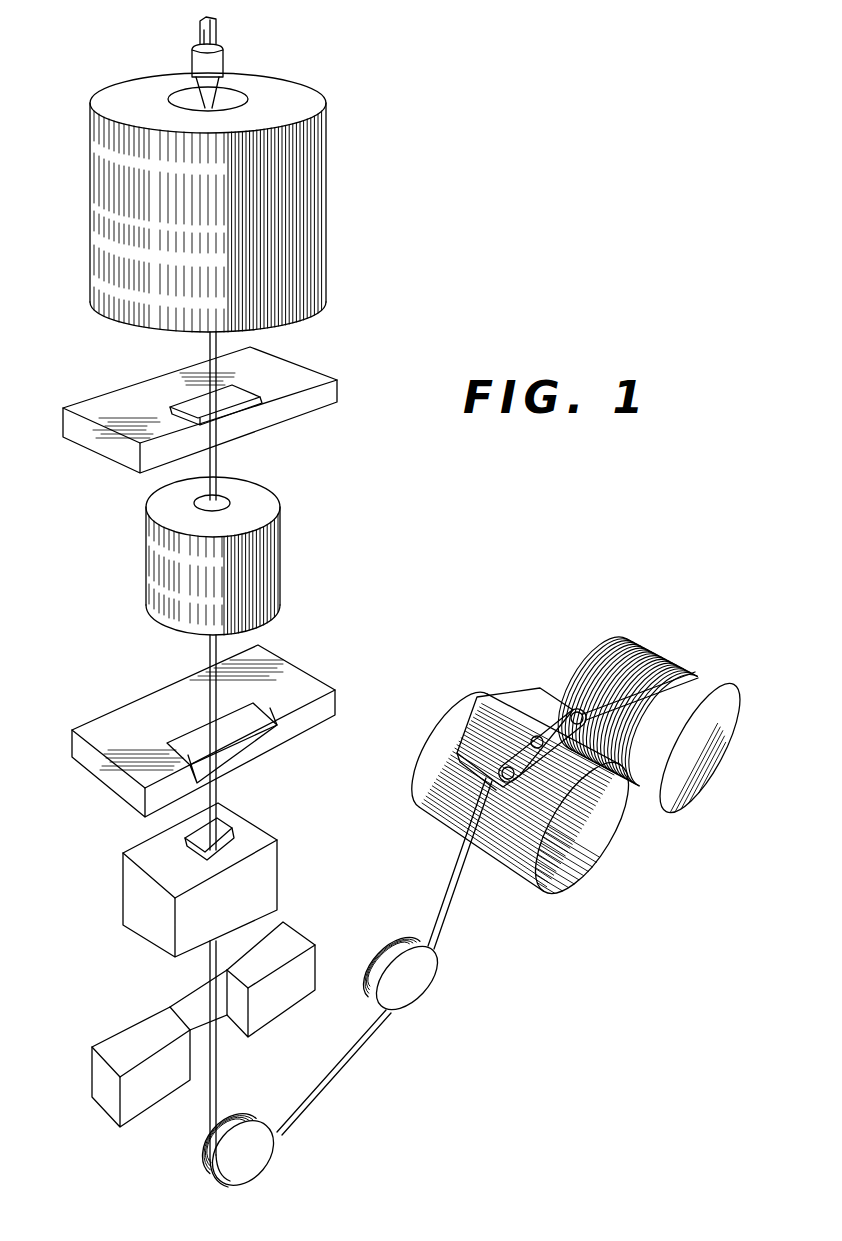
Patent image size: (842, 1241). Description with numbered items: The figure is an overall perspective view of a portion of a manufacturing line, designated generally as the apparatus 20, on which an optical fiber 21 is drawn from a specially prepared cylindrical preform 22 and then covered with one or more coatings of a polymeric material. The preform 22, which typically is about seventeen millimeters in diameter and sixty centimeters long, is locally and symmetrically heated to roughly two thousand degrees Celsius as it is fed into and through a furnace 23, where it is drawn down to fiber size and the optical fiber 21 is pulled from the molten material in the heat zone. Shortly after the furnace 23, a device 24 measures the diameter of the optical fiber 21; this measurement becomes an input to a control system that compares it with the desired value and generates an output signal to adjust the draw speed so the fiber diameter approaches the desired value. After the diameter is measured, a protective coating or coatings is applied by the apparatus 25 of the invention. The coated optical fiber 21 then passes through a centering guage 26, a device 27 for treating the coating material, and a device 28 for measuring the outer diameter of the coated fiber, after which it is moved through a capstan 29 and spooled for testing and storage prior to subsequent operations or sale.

The apparatus 20 is at (402, 531).
The optical fiber 21 is at (217, 468).
The preform 22 is at (217, 28).
The furnace 23 is at (323, 211).
The device 24 is at (311, 366).
The apparatus 25 is at (273, 560).
The centering guage 26 is at (303, 672).
The device 27 is at (277, 880).
The device 28 is at (315, 957).
The capstan 29 is at (515, 697).